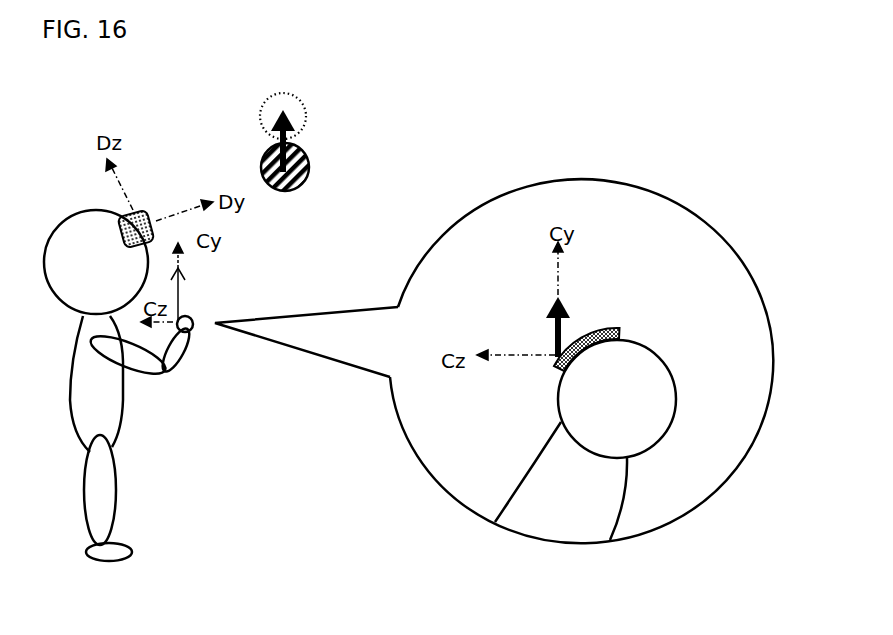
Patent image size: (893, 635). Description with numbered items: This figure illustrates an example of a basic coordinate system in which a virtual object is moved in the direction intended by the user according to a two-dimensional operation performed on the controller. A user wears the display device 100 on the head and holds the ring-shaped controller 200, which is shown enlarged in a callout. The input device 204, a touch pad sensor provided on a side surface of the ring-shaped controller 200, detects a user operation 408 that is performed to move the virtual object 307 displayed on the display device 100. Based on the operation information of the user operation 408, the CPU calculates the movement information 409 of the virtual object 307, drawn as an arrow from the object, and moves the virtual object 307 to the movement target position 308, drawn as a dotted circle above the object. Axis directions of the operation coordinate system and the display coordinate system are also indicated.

The display device 100 is at (118, 228).
The ring-shaped controller 200 is at (603, 321).
The input device 204 is at (556, 368).
The virtual object 307 is at (260, 168).
The movement target position 308 is at (262, 106).
The user operation 408 is at (545, 327).
The movement information 409 is at (302, 130).